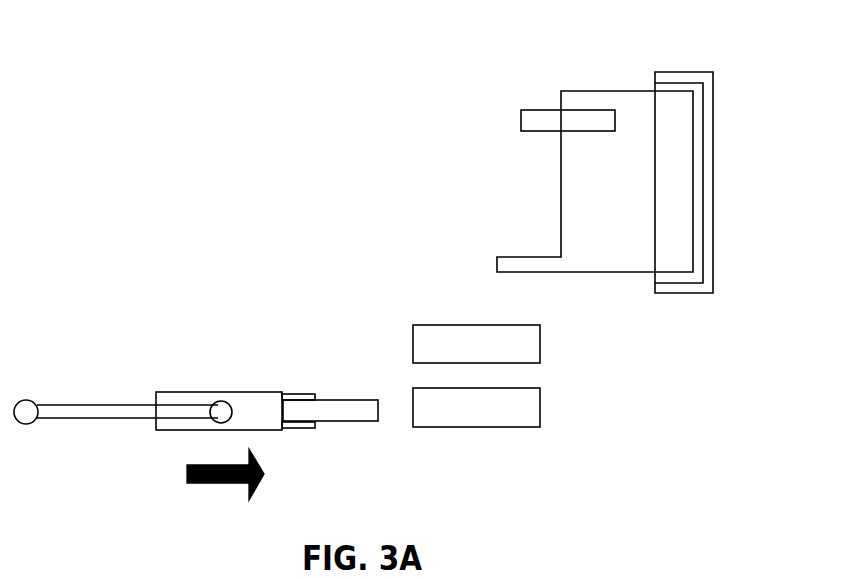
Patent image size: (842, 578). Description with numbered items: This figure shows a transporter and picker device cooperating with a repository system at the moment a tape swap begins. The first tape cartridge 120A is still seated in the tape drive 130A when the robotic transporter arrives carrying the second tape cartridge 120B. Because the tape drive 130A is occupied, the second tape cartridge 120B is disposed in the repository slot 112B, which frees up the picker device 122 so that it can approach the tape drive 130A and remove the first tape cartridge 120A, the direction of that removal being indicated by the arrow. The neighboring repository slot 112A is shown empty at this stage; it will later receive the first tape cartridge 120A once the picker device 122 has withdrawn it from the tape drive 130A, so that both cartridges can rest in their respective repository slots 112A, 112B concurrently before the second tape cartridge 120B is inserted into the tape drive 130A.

The tape drive 130A is at (623, 91).
The first tape cartridge 120A is at (534, 110).
The picker device 122 is at (187, 392).
The second tape cartridge 120B is at (363, 400).
The repository slot 112A is at (541, 331).
The repository slot 112B is at (541, 399).